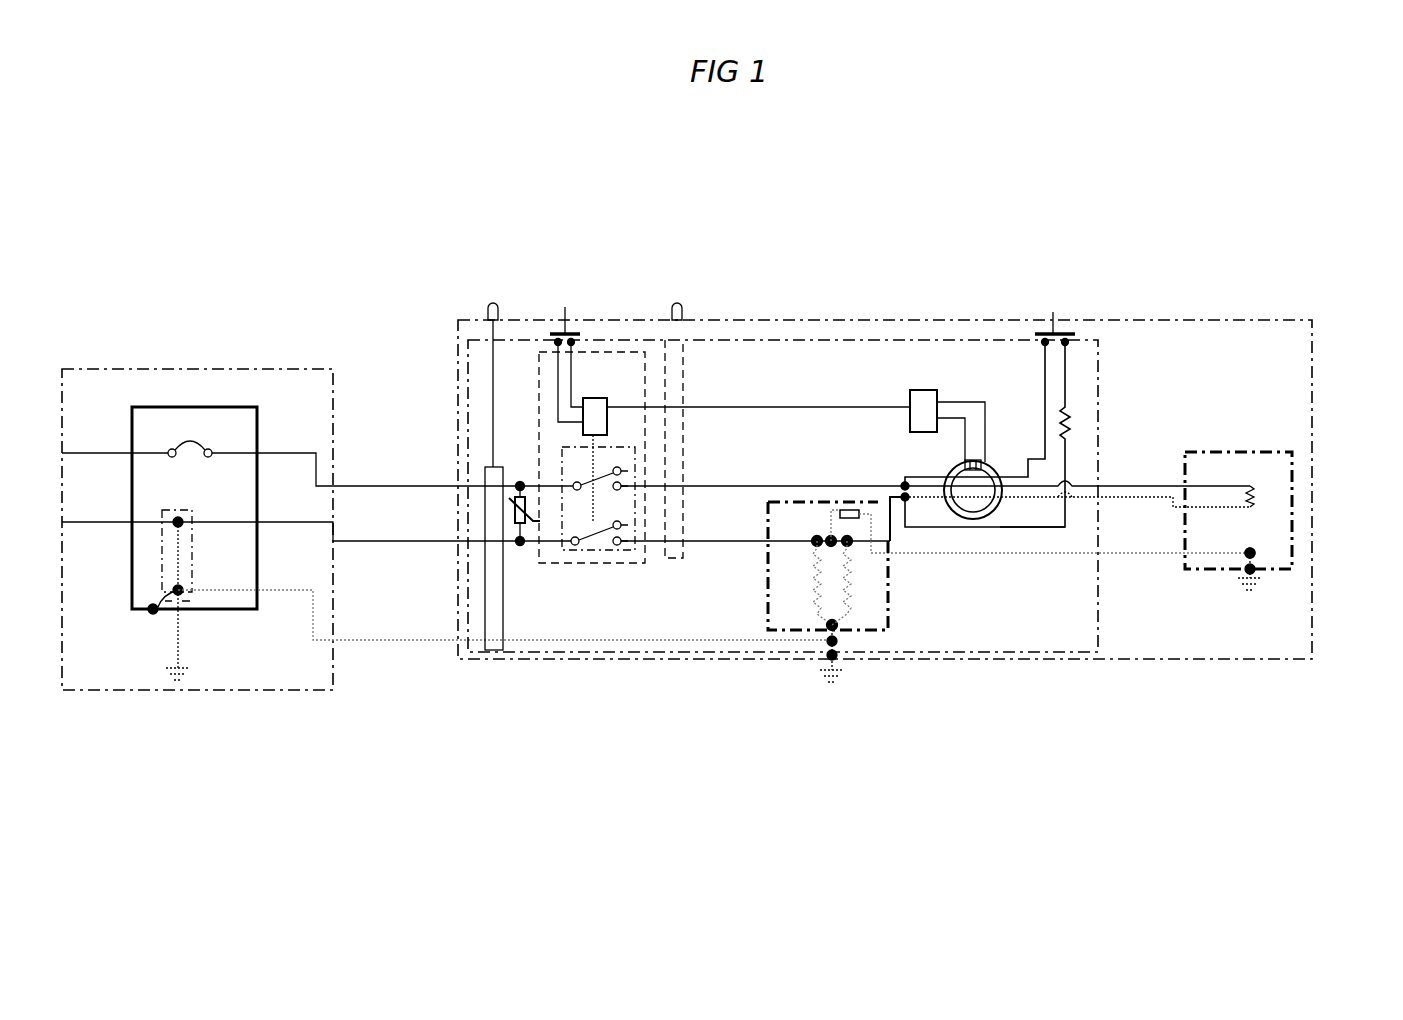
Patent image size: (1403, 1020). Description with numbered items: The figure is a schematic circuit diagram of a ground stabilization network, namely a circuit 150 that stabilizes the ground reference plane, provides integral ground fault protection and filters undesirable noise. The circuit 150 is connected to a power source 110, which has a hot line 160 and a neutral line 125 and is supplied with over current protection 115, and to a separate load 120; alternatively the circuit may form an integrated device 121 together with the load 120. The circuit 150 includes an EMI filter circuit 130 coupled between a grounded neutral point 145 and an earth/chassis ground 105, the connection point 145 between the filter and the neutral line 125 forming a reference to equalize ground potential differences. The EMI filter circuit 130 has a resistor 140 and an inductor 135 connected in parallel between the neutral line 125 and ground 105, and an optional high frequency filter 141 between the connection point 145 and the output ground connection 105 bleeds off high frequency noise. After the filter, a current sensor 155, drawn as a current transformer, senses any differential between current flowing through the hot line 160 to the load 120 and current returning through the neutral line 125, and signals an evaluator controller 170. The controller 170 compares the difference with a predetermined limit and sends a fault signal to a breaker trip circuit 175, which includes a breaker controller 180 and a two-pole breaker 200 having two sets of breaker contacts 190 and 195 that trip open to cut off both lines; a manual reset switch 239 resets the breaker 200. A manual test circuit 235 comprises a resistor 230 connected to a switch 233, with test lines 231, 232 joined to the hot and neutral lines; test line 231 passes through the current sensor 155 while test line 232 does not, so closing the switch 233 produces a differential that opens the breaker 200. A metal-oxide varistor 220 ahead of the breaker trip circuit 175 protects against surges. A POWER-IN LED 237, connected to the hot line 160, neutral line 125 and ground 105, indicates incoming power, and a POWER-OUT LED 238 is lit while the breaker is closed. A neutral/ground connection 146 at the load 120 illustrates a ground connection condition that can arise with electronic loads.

The earth/chassis ground 105 is at (178, 694).
The power source 110 is at (200, 362).
The over current protection 115 is at (218, 443).
The load 120 is at (1237, 436).
The integrated device 121 is at (835, 316).
The neutral line 125 is at (366, 548).
The EMI filter circuit 130 is at (897, 633).
The inductor 135 is at (788, 592).
The resistor 140 is at (878, 583).
The high frequency filter 141 is at (841, 498).
The grounded neutral point 145 is at (817, 530).
The neutral/ground connection 146 is at (1260, 553).
The circuit 150 is at (727, 336).
The current sensor 155 is at (935, 468).
The hot line 160 is at (372, 480).
The evaluator controller 170 is at (917, 378).
The breaker trip circuit 175 is at (548, 346).
The breaker controller 180 is at (607, 393).
The breaker contacts 190 is at (632, 475).
The breaker contacts 195 is at (630, 533).
The two-pole breaker 200 is at (648, 500).
The metal-oxide varistor 220 is at (520, 556).
The resistor 230 is at (1080, 405).
The test line 231 is at (1015, 470).
The test line 232 is at (1015, 533).
The switch 233 is at (1075, 338).
The manual test circuit 235 is at (1052, 308).
The POWER-IN LED 237 is at (495, 290).
The POWER-OUT LED 238 is at (677, 292).
The reset switch 239 is at (565, 306).